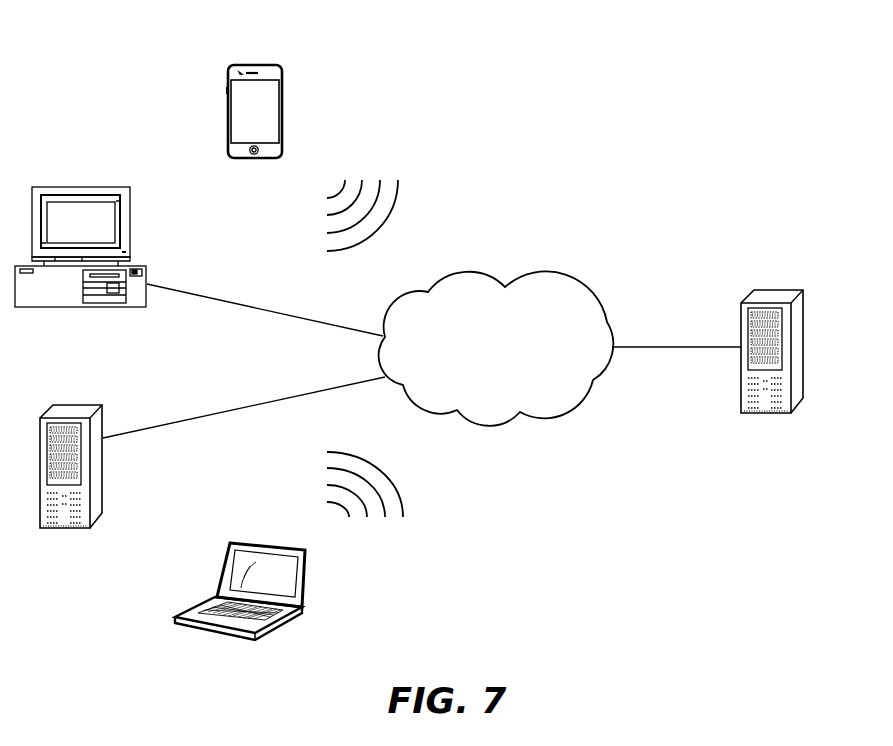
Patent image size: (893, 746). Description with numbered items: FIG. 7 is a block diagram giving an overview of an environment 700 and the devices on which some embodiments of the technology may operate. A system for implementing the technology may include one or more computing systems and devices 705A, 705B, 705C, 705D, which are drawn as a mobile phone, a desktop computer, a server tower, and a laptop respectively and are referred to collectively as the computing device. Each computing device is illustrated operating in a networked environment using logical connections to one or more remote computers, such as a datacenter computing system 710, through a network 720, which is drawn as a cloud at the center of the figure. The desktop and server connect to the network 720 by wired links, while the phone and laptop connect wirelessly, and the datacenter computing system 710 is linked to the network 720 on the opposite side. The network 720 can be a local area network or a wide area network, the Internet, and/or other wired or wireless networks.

The environment 700 is at (652, 113).
The computing system and device 705A is at (268, 65).
The computing system and device 705B is at (123, 183).
The computing system and device 705C is at (95, 402).
The computing system and device 705D is at (308, 586).
The network 720 is at (552, 274).
The datacenter computing system 710 is at (802, 290).